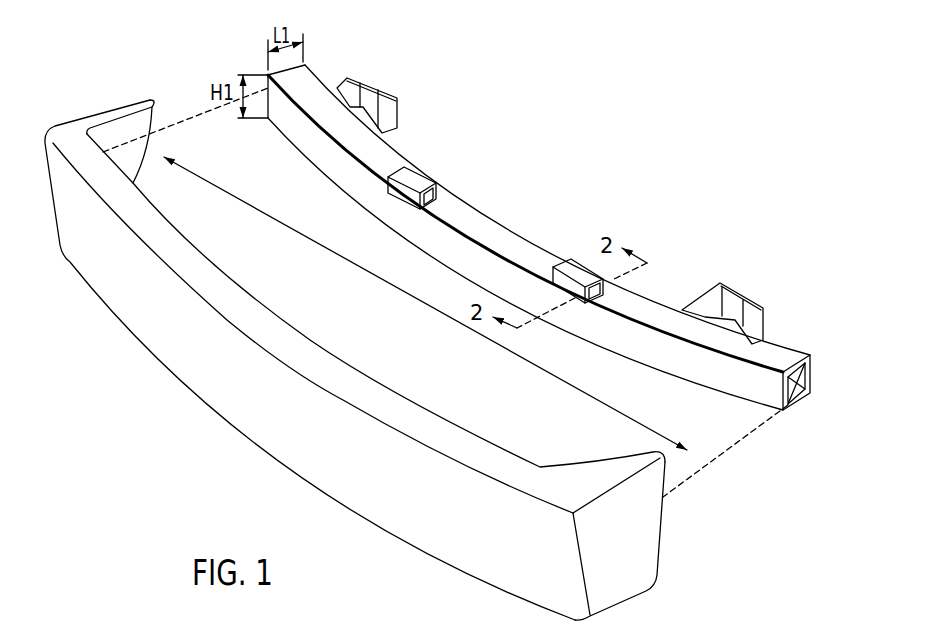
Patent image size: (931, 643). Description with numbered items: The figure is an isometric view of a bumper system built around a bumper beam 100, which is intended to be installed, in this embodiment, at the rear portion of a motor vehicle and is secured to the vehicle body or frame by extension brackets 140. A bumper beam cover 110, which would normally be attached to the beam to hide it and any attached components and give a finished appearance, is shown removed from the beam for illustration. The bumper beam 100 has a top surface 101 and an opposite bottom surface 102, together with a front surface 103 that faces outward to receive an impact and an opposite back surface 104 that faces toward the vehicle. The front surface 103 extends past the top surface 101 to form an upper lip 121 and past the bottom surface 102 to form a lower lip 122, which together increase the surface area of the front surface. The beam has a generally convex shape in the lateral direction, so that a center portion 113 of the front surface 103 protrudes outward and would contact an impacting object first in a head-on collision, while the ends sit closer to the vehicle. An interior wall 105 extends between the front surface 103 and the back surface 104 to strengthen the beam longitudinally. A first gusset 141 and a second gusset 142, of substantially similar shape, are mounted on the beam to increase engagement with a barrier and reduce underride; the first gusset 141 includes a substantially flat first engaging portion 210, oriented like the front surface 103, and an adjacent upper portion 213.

The bumper beam 100 is at (688, 184).
The top surface 101 is at (660, 313).
The bottom surface 102 is at (797, 412).
The front surface 103 is at (750, 382).
The back surface 104 is at (810, 380).
The interior wall 105 is at (790, 410).
The bumper beam cover 110 is at (180, 357).
The center portion 113 is at (480, 260).
The upper lip 121 is at (768, 360).
The lower lip 122 is at (775, 418).
The extension brackets 140 is at (367, 77).
The first gusset 141 is at (567, 250).
The second gusset 142 is at (417, 177).
The first engaging portion 210 is at (573, 292).
The upper portion 213 is at (580, 273).